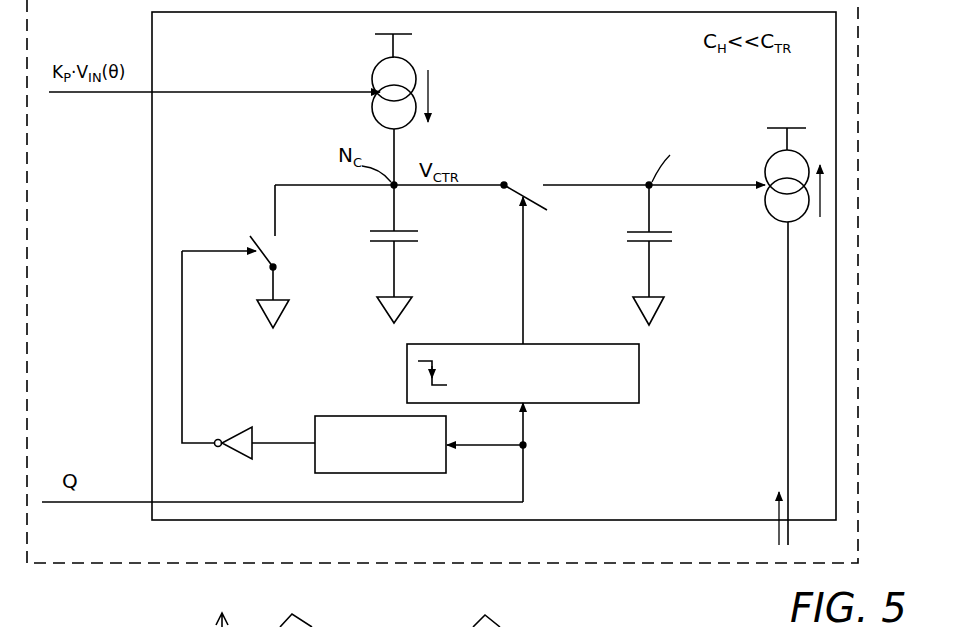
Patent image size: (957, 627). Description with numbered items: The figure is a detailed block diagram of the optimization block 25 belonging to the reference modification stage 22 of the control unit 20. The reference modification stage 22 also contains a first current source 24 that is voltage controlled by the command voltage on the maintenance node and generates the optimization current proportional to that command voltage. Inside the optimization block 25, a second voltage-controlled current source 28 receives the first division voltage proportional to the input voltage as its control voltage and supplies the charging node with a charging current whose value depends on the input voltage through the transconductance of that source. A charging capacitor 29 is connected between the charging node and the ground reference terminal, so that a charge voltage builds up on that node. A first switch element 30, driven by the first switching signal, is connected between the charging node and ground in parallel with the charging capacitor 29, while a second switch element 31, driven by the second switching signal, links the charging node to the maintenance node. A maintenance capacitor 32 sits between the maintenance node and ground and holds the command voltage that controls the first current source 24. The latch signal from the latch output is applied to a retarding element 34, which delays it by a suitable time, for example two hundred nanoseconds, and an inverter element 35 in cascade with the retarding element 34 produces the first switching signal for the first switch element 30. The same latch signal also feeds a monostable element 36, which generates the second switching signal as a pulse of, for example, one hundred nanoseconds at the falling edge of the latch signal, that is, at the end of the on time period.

The control unit 20 is at (103, 566).
The reference modification stage 22 is at (150, 408).
The first current source 24 is at (768, 160).
The optimization block 25 is at (515, 138).
The second voltage-controlled current source 28 is at (372, 72).
The charging capacitor 29 is at (378, 245).
The first switch element 30 is at (267, 252).
The second switch element 31 is at (512, 180).
The maintenance capacitor 32 is at (640, 248).
The retarding element 34 is at (354, 416).
The inverter element 35 is at (241, 432).
The monostable element 36 is at (640, 387).